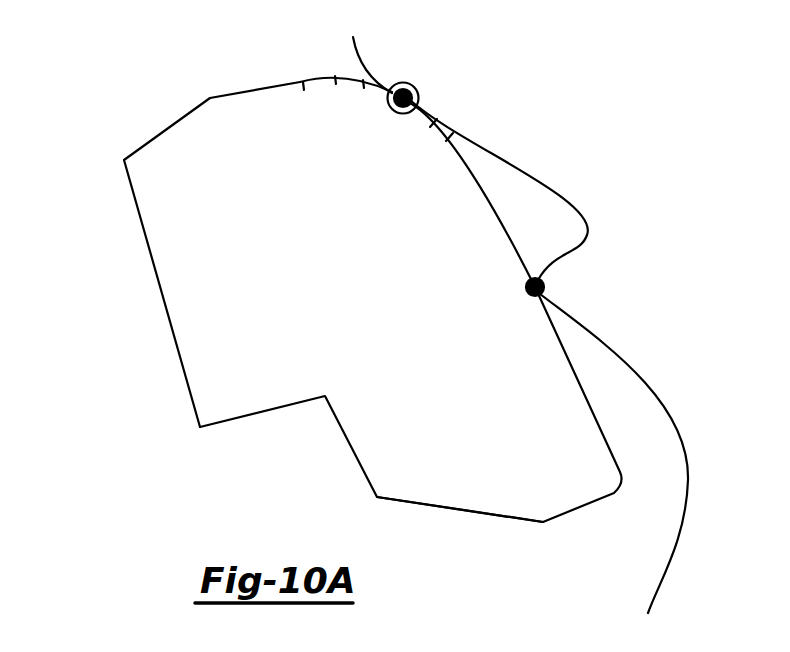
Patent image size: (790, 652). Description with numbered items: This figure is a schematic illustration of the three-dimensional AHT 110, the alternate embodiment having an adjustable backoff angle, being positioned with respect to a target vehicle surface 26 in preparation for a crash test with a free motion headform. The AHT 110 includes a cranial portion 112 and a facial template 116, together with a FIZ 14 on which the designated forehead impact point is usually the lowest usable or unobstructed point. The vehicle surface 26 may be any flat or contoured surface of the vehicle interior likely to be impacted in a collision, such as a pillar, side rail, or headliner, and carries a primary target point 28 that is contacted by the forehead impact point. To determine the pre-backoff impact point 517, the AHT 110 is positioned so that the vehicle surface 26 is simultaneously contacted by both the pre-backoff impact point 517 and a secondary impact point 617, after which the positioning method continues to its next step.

The FIZ 14 is at (330, 73).
The primary target point 28 is at (414, 93).
The pre-backoff impact point 517 is at (392, 106).
The vehicle surface 26 is at (587, 126).
The secondary impact point 617 is at (546, 290).
The cranial portion 112 is at (214, 257).
The AHT 110 is at (153, 398).
The facial template 116 is at (527, 456).